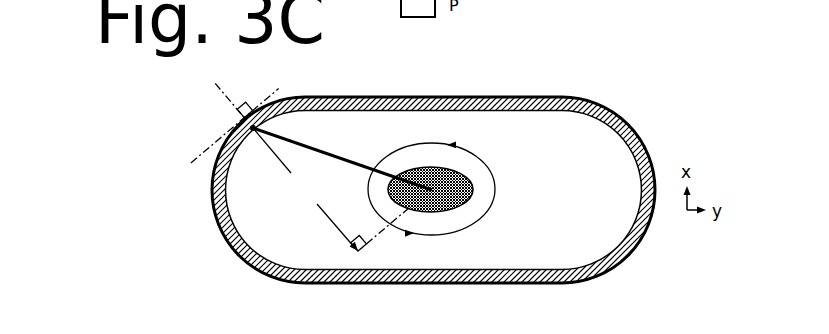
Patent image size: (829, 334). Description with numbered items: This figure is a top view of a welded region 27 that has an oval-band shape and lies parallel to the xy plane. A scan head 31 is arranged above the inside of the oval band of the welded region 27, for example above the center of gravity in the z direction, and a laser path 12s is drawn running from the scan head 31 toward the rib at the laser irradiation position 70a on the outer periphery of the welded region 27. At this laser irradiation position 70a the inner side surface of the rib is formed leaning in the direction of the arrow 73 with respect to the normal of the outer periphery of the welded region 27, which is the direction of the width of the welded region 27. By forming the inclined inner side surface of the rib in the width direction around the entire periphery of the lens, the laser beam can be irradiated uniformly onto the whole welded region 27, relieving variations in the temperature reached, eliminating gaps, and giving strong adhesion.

The welded region 27 is at (463, 100).
The scan head 31 is at (421, 178).
The optical axis of light 12s is at (357, 148).
The arrow 73 is at (285, 152).
The laser irradiation position 70a is at (228, 126).